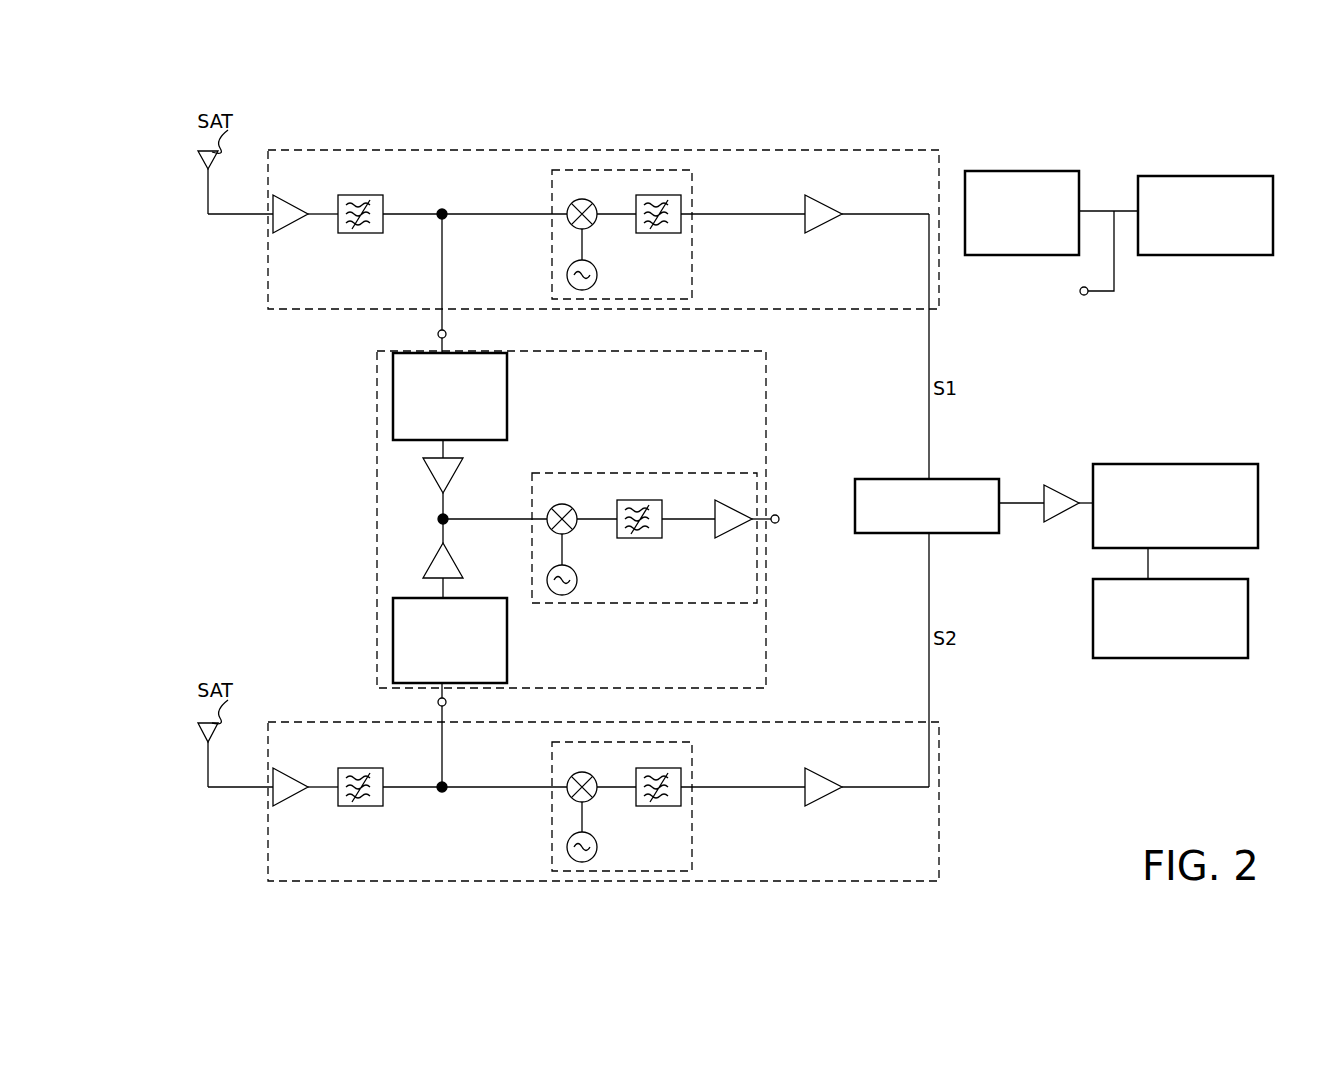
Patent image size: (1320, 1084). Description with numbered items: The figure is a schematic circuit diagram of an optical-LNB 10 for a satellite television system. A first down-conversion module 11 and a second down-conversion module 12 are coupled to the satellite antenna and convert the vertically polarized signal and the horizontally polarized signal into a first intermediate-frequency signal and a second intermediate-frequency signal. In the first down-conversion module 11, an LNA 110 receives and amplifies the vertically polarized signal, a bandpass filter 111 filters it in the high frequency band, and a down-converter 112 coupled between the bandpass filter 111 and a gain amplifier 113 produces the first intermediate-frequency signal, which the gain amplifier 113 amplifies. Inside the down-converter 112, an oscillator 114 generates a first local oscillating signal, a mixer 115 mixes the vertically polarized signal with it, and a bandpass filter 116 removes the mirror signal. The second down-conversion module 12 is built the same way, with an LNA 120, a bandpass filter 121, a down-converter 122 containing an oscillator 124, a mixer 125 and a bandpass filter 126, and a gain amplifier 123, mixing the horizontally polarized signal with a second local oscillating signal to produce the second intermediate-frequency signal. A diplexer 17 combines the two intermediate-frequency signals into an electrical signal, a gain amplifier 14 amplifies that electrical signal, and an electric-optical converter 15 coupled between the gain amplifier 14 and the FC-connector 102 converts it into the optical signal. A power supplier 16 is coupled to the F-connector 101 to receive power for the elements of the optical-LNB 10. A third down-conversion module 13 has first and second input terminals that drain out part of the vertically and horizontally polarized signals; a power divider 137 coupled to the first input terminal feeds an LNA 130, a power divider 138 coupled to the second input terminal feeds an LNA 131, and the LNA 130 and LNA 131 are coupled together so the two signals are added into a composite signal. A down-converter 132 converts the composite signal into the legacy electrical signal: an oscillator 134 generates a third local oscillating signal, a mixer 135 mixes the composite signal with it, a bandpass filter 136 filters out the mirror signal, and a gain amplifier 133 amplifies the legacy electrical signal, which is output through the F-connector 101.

The optical-LNB 10 is at (168, 158).
The first down-conversion module 11 is at (910, 150).
The second down-conversion module 12 is at (939, 752).
The third down-conversion module 13 is at (766, 392).
The gain amplifier 14 is at (1060, 485).
The electric-optical converter 15 is at (1165, 464).
The power supplier 16 is at (1030, 171).
The diplexer 17 is at (955, 479).
The F-connector 101 is at (1200, 176).
The FC-connector 102 is at (1248, 612).
The LNA 110 is at (300, 205).
The bandpass filter 111 is at (383, 204).
The down-converter 112 is at (692, 262).
The gain amplifier 113 is at (818, 205).
The oscillator 114 is at (567, 275).
The mixer 115 is at (586, 199).
The bandpass filter 116 is at (662, 196).
The LNA 120 is at (300, 778).
The bandpass filter 121 is at (383, 777).
The down-converter 122 is at (692, 835).
The gain amplifier 123 is at (818, 778).
The oscillator 124 is at (567, 847).
The mixer 125 is at (586, 772).
The bandpass filter 126 is at (662, 768).
The LNA 130 is at (428, 474).
The LNA 131 is at (428, 564).
The down-converter 132 is at (680, 473).
The gain amplifier 133 is at (738, 538).
The oscillator 134 is at (575, 595).
The mixer 135 is at (566, 504).
The bandpass filter 136 is at (640, 500).
The power divider 137 is at (393, 396).
The power divider 138 is at (393, 640).